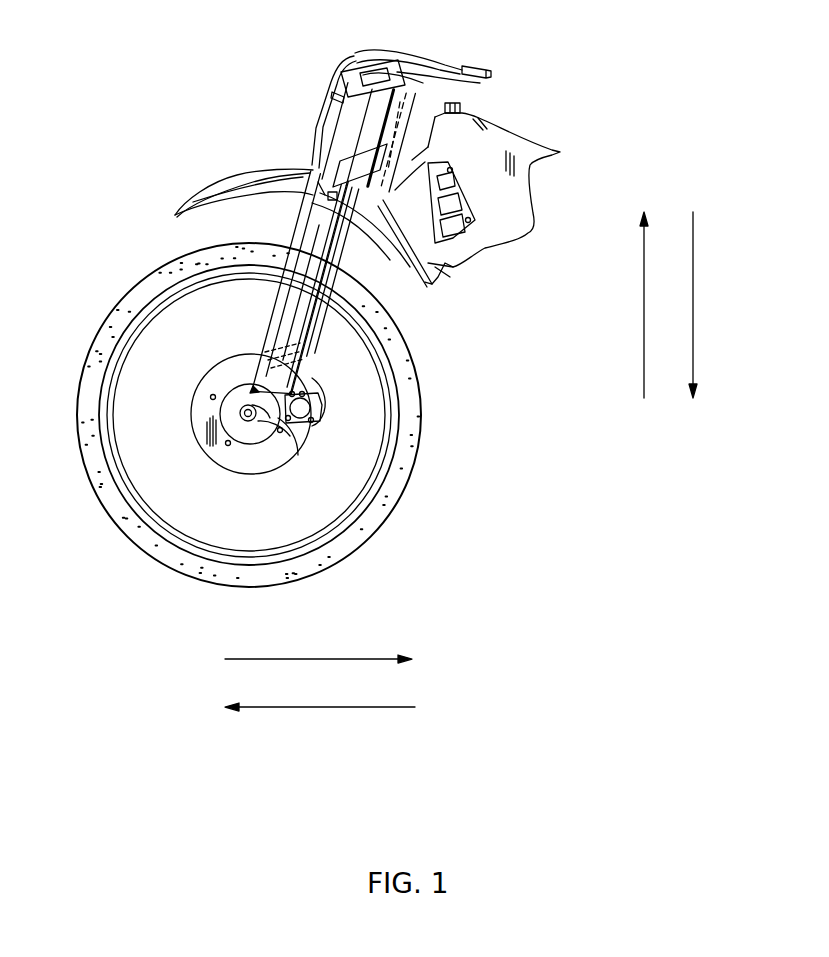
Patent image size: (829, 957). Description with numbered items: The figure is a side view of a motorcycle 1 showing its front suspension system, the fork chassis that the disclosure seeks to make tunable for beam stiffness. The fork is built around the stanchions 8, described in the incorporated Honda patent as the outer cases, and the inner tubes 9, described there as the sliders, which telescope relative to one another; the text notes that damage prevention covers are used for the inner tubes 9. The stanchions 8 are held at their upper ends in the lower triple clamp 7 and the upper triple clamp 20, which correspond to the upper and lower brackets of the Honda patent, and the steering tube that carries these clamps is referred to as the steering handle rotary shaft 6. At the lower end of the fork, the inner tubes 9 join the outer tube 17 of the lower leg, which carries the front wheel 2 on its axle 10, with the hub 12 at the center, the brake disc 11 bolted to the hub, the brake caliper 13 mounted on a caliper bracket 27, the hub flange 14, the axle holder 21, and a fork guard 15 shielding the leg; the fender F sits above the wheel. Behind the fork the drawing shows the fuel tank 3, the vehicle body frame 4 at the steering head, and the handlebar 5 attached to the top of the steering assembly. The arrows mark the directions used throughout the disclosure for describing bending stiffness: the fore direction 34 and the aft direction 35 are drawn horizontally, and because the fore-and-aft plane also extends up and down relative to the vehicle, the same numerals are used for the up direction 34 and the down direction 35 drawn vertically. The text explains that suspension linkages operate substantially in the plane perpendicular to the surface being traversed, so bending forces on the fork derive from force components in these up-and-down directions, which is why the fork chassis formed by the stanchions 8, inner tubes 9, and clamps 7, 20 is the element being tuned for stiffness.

The motorcycle 1 is at (347, 267).
The front wheel 2 is at (397, 473).
The fuel tank 3 is at (421, 118).
The vehicle body frame 4 is at (410, 116).
The handlebar 5 is at (456, 66).
The steering handle rotary shaft 6 is at (398, 156).
The lower triple clamp 7 is at (360, 174).
The stanchions 8 is at (328, 237).
The inner tubes 9 is at (302, 326).
The axle 10 is at (251, 421).
The brake disc 11 is at (268, 418).
The hub 12 is at (291, 427).
The brake caliper 13 is at (305, 405).
The hub flange 14 is at (287, 444).
The fork guard 15 is at (318, 142).
The outer tube 17 is at (282, 308).
The upper triple clamp 20 is at (370, 76).
The axle holder 21 is at (255, 388).
The caliper bracket 27 is at (308, 374).
The fore / up direction 34 is at (644, 288).
The aft / down direction 35 is at (693, 270).
The front fender F is at (252, 181).